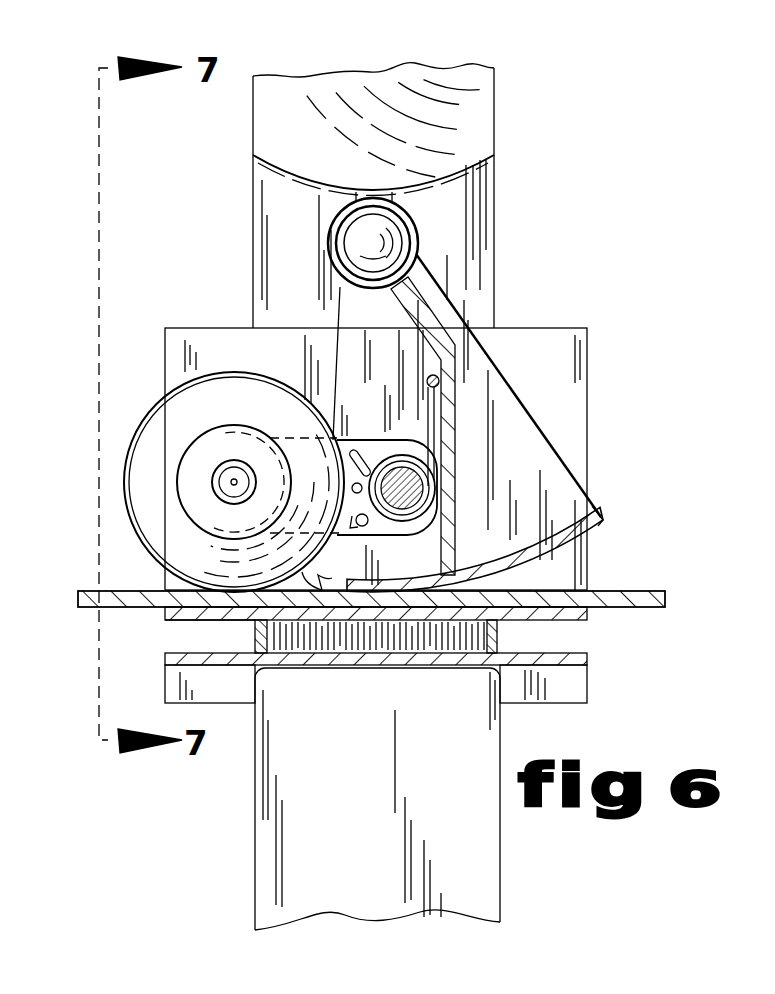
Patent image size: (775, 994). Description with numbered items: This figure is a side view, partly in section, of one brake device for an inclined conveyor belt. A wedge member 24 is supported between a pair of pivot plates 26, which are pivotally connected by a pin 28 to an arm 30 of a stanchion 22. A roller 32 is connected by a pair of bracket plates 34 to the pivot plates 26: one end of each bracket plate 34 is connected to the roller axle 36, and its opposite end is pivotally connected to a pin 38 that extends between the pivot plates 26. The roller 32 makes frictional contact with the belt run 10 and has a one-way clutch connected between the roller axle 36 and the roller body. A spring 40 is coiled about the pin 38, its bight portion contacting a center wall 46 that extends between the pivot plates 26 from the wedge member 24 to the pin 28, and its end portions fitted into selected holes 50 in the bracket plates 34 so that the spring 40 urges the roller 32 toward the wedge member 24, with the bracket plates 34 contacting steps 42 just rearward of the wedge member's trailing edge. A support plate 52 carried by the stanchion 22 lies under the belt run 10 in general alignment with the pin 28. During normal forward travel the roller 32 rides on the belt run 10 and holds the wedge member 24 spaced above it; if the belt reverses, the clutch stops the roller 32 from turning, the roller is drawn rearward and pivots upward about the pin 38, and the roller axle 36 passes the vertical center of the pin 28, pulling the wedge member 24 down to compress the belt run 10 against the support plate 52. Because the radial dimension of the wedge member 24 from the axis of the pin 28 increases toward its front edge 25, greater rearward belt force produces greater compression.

The belt run 10 is at (634, 594).
The stanchion 22 is at (488, 236).
The wedge member 24 is at (533, 542).
The front edge 25 is at (607, 519).
The pivot plates 26 is at (503, 380).
The pin 28 is at (345, 248).
The arm 30 is at (470, 135).
The roller 32 is at (155, 413).
The bracket plates 34 is at (374, 441).
The roller axle 36 is at (225, 481).
The pin 38 is at (404, 505).
The spring 40 is at (430, 443).
The steps 42 is at (322, 572).
The center wall 46 is at (452, 445).
The holes 50 is at (352, 519).
The support plate 52 is at (225, 618).